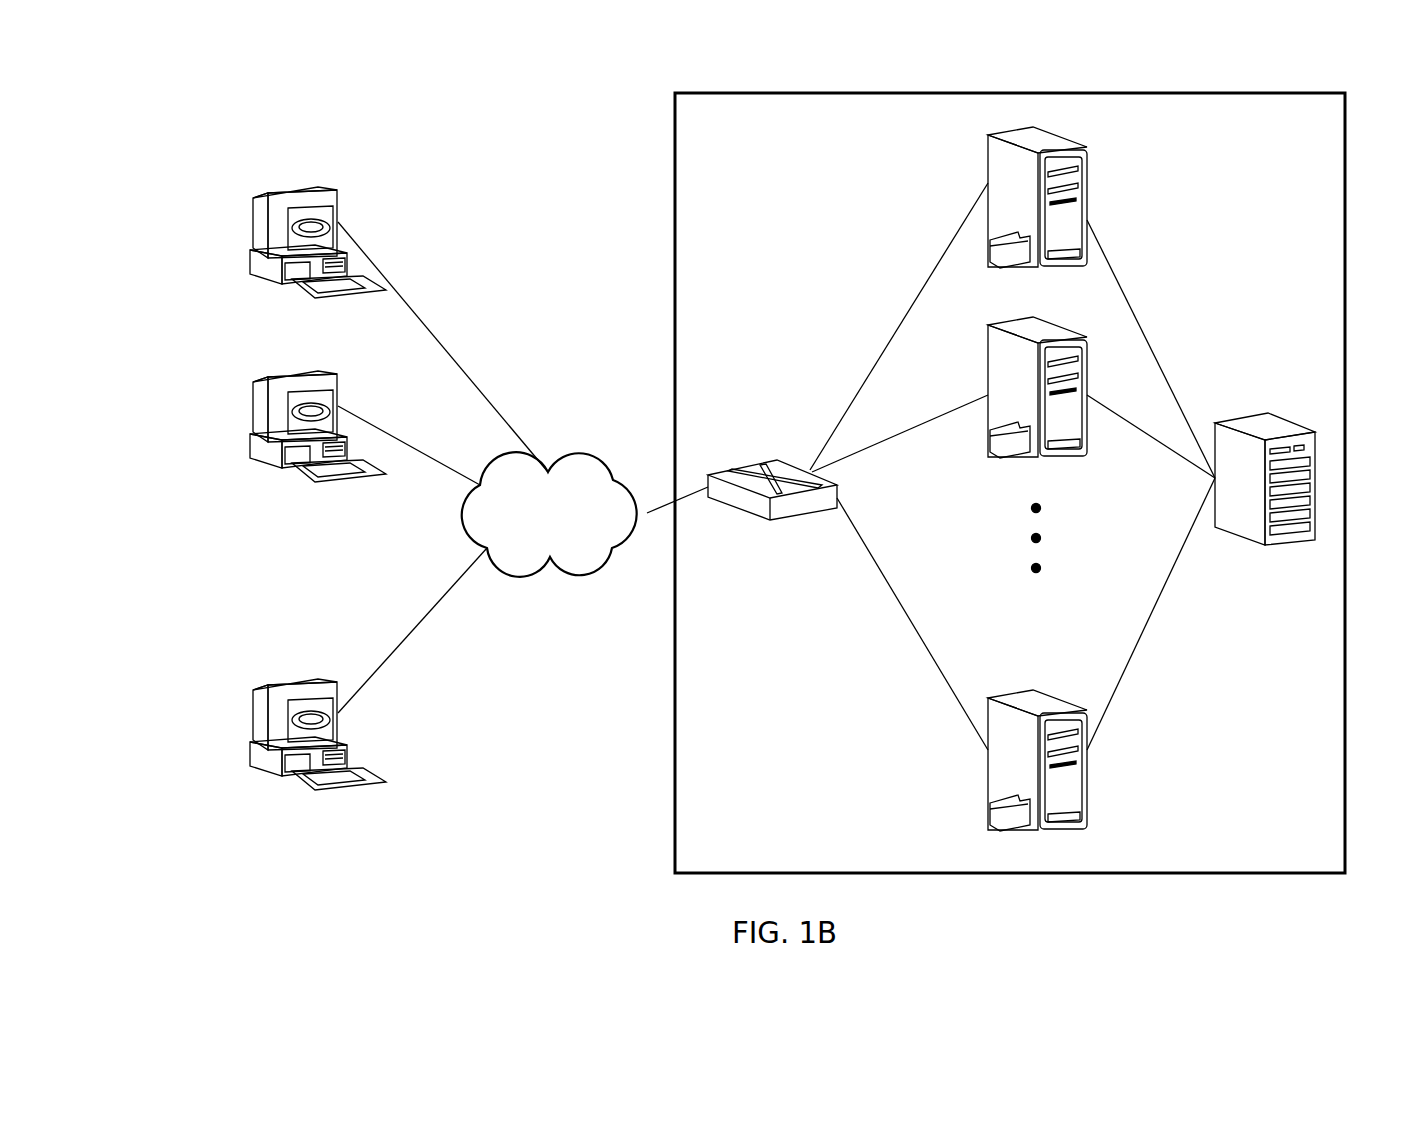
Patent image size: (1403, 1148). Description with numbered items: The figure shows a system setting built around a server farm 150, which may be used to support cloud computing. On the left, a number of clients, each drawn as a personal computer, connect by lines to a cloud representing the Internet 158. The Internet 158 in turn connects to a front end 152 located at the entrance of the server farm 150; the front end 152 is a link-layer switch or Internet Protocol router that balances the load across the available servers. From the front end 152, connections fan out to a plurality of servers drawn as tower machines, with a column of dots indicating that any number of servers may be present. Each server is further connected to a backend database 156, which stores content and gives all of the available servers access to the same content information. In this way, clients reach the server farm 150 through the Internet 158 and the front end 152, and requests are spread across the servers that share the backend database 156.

The server farm 150 is at (1315, 143).
The front end 152 is at (762, 462).
The backend database 156 is at (1250, 413).
The Internet 158 is at (578, 458).